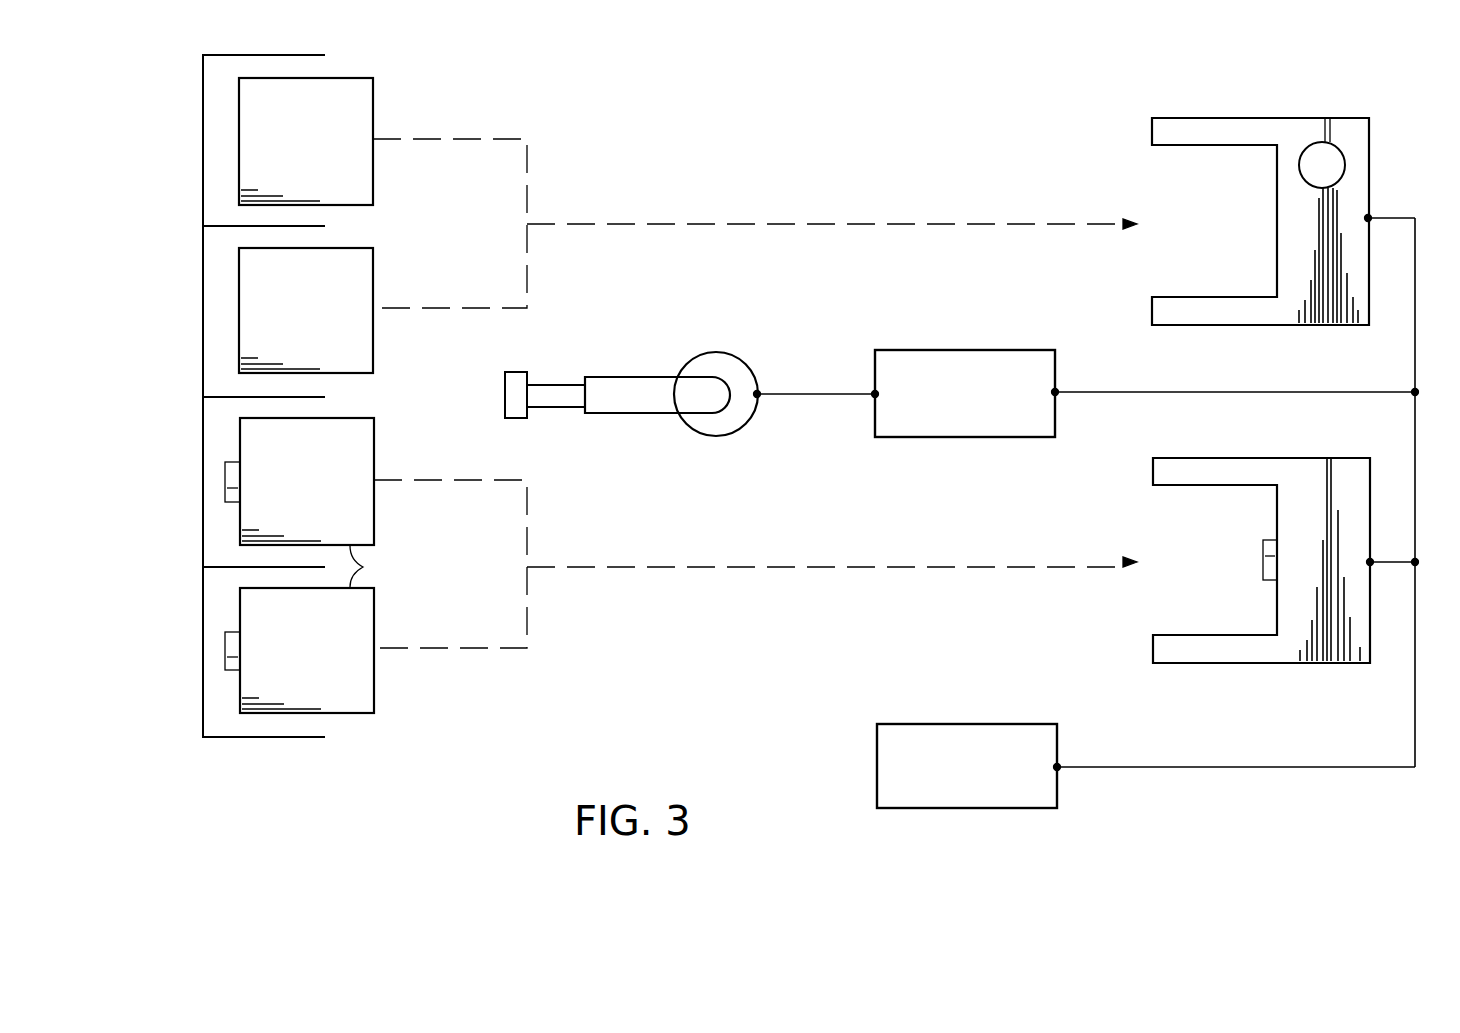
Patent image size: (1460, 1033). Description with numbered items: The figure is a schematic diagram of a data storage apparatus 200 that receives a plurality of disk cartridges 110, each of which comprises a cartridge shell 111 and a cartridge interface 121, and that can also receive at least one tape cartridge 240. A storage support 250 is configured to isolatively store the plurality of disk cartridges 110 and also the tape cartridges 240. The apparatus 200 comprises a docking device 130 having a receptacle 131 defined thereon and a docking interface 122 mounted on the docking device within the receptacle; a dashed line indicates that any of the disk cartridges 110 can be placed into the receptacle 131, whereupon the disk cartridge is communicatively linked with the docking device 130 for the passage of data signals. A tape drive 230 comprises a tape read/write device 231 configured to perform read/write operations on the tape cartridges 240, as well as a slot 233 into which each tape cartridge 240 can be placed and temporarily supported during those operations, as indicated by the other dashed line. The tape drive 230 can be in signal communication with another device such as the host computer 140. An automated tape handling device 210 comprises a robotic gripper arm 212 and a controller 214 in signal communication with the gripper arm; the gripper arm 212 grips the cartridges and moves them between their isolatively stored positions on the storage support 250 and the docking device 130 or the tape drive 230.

The apparatus 200 is at (938, 68).
The storage support 250 is at (203, 310).
The tape cartridge 240 is at (322, 155).
The disk cartridge 110 is at (358, 418).
The cartridge shell 111 is at (363, 567).
The cartridge interface 121 is at (232, 504).
The robotic gripper arm 212 is at (746, 364).
The automated tape handling device 210 is at (872, 425).
The controller 214 is at (982, 409).
The tape drive 230 is at (1310, 116).
The tape read/write device 231 is at (1345, 163).
The slot 233 is at (1187, 254).
The docking device 130 is at (1318, 665).
The receptacle 131 is at (1160, 528).
The docking interface 122 is at (1262, 560).
The host computer 140 is at (984, 784).